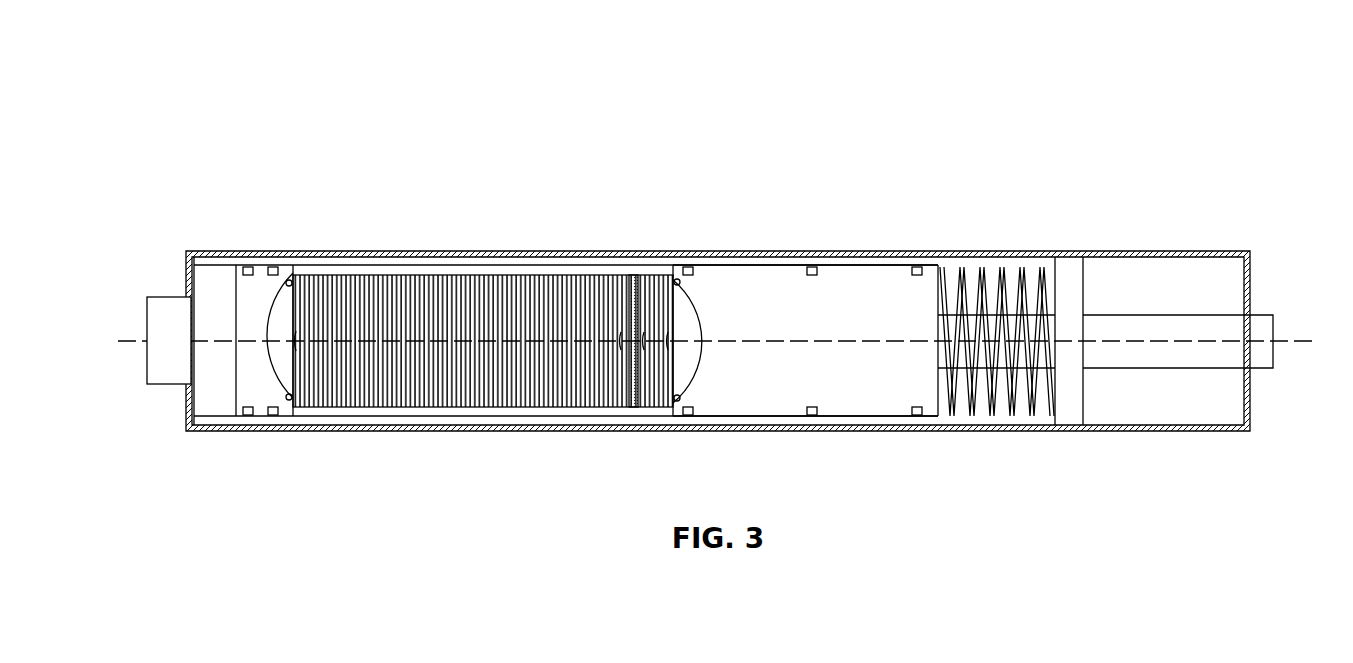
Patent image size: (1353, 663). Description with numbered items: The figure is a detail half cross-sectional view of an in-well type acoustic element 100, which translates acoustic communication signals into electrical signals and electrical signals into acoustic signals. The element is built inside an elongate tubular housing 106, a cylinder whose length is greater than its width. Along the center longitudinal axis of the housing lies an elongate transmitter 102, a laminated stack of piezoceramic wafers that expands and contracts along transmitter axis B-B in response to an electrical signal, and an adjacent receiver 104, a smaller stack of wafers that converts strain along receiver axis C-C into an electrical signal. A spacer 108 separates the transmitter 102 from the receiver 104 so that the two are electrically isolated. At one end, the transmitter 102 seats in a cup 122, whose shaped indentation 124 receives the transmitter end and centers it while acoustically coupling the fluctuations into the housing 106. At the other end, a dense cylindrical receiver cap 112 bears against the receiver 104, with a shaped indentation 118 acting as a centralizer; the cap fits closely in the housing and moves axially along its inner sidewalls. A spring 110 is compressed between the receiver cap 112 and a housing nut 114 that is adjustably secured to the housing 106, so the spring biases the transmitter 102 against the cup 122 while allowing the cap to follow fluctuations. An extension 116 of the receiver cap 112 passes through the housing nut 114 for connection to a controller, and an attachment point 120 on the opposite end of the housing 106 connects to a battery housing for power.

The in-well type acoustic element 100 is at (190, 88).
The elongate transmitter 102 is at (477, 397).
The receiver 104 is at (653, 397).
The elongate tubular housing 106 is at (322, 428).
The spacer 108 is at (636, 277).
The spring 110 is at (991, 395).
The receiver cap 112 is at (872, 278).
The housing nut 114 is at (1068, 280).
The extension 116 is at (1177, 328).
The shaped indentation 118 is at (698, 303).
The attachment point 120 is at (170, 315).
The cup 122 is at (262, 273).
The shaped indentation 124 is at (267, 360).